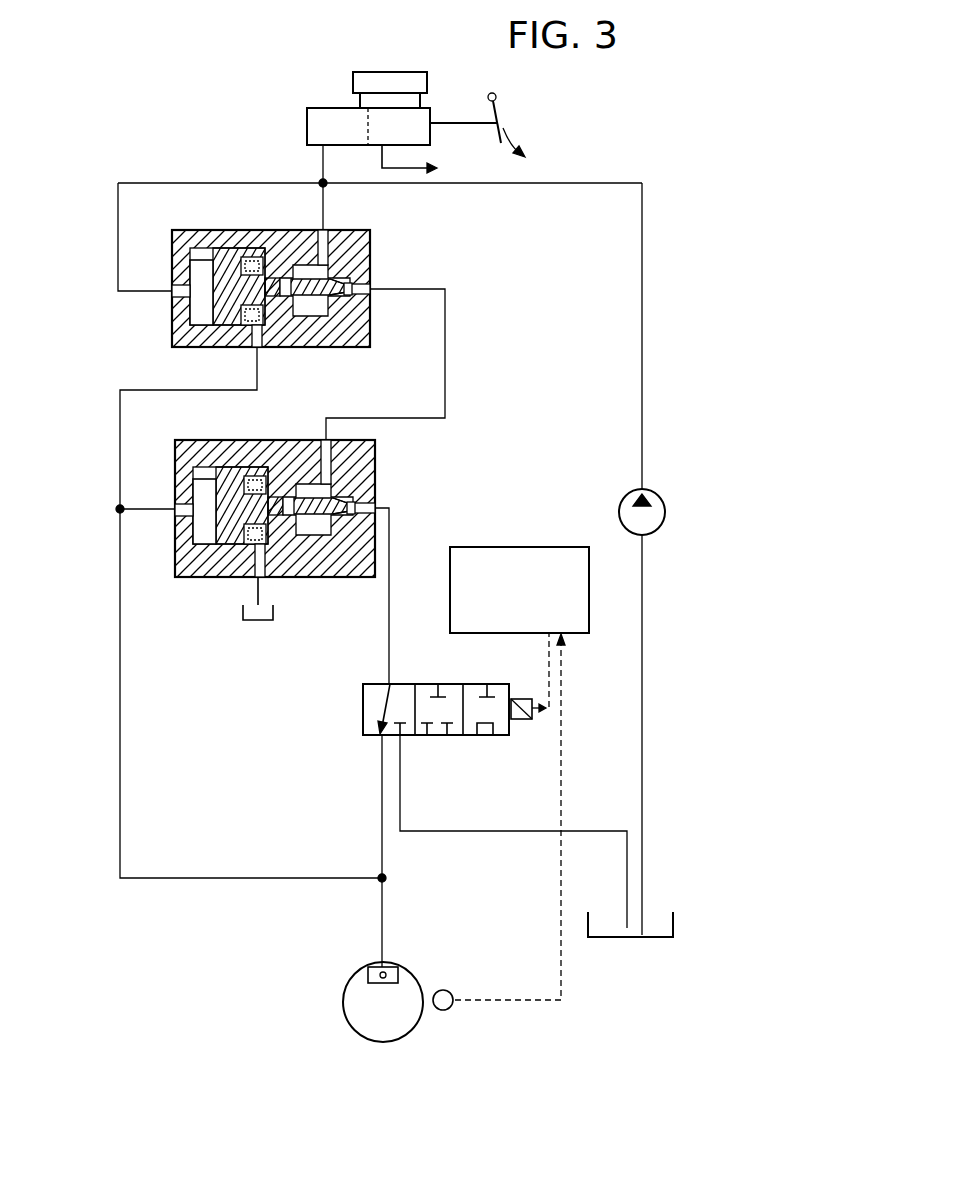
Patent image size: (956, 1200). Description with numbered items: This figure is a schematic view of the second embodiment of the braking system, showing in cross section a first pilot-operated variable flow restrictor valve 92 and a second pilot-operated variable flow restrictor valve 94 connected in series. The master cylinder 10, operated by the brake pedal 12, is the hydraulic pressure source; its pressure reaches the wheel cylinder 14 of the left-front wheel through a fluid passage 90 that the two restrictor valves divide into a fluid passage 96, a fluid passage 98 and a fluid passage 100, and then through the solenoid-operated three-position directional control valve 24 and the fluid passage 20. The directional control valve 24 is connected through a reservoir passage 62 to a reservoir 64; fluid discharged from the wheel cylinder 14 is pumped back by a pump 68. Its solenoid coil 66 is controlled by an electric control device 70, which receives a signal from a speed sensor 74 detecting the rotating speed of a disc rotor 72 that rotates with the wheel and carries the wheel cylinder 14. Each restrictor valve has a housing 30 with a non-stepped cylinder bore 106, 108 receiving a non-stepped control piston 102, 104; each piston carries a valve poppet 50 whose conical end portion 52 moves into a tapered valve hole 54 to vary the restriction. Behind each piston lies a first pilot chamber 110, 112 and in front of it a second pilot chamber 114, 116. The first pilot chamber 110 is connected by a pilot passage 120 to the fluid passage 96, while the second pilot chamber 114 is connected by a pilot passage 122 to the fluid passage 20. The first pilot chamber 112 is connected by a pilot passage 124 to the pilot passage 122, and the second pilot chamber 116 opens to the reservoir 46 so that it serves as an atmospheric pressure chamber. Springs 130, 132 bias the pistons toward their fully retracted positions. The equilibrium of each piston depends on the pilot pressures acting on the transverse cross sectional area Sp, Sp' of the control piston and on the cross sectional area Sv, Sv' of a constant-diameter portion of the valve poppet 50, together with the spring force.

The master cylinder 10 is at (315, 128).
The brake pedal 12 is at (500, 127).
The wheel cylinder 14 is at (370, 975).
The fluid passage 20 is at (385, 935).
The solenoid-operated three-position directional control valve 24 is at (454, 752).
The housing 30 is at (355, 330).
The reservoir 46 is at (258, 624).
The valve poppet 50 is at (313, 310).
The conical end portion 52 is at (332, 296).
The tapered valve hole 54 is at (352, 287).
The reservoir passage 62 is at (512, 831).
The reservoir 64 is at (605, 940).
The solenoid coil 66 is at (515, 719).
The pump 68 is at (626, 517).
The electric control device 70 is at (547, 548).
The disc rotor 72 is at (405, 1020).
The speed sensor 74 is at (450, 1010).
The fluid passage 90 is at (317, 430).
The first pilot-operated variable flow restrictor valve 92 is at (280, 292).
The second pilot-operated variable flow restrictor valve 94 is at (306, 534).
The fluid passage 96 is at (326, 214).
The fluid passage 98 is at (445, 320).
The fluid passage 100 is at (389, 600).
The control piston 102 is at (186, 345).
The control piston 104 is at (231, 470).
The cylinder bore 106 is at (214, 263).
The cylinder bore 108 is at (232, 514).
The first pilot chamber 110 is at (196, 315).
The first pilot chamber 112 is at (178, 570).
The second pilot chamber 114 is at (258, 327).
The second pilot chamber 116 is at (255, 578).
The pilot passage 120 is at (213, 183).
The pilot passage 122 is at (122, 705).
The pilot passage 124 is at (155, 510).
The spring 130 is at (255, 262).
The spring 132 is at (258, 480).
The transverse cross sectional area of the control piston Sp is at (171, 285).
The transverse cross sectional area of the valve poppet Sv is at (281, 329).
The transverse cross sectional area of the control piston Sp' is at (216, 549).
The transverse cross sectional area of the valve poppet Sv' is at (292, 558).